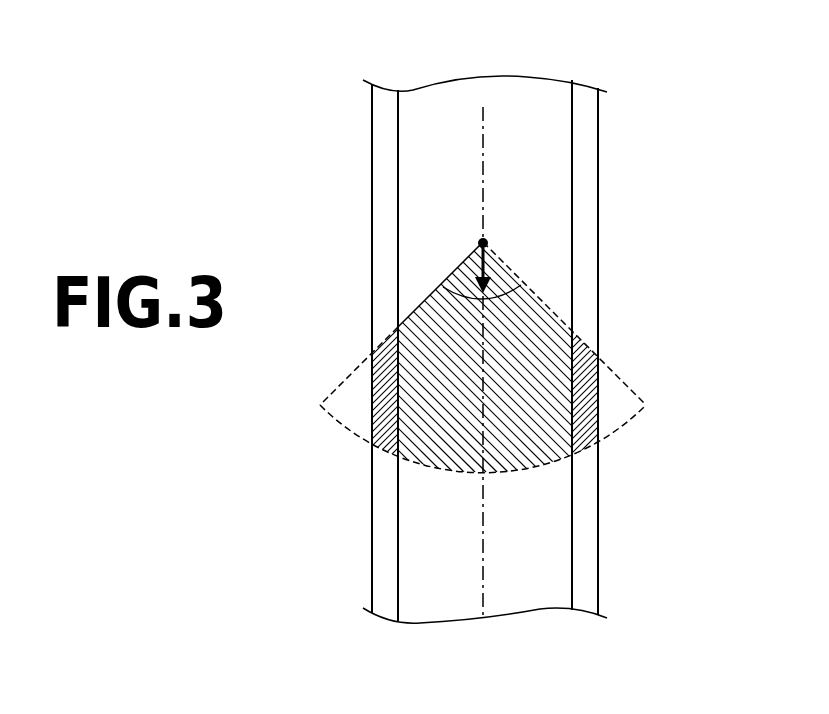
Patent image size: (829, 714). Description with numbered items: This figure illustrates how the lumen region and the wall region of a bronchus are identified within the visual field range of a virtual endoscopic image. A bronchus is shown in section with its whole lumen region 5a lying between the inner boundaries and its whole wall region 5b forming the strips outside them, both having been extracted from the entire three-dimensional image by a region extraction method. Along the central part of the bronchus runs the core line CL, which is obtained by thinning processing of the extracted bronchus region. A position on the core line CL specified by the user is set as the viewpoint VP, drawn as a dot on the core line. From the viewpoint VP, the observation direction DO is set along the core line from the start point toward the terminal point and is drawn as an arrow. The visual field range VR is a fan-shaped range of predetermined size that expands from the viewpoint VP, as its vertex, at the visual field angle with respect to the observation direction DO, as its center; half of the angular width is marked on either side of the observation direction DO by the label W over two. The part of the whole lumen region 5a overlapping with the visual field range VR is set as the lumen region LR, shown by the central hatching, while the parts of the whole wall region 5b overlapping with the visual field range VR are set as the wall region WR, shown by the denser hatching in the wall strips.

The lumen region 5a is at (557, 123).
The wall region 5b is at (583, 160).
The core line CL is at (483, 107).
The viewpoint VP is at (502, 228).
The observation direction DO is at (488, 257).
The lumen region LR is at (543, 315).
The visual field range VR is at (340, 385).
The wall region WR is at (383, 440).
The width W is at (469, 321).